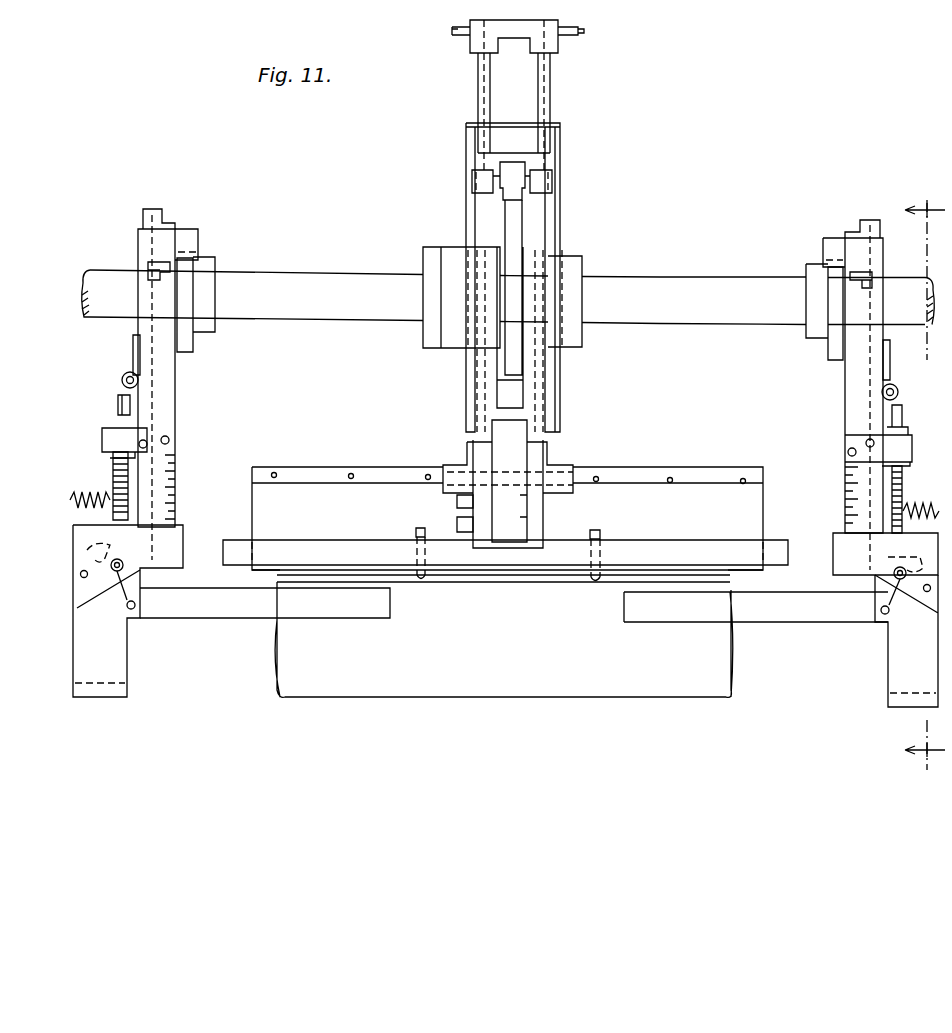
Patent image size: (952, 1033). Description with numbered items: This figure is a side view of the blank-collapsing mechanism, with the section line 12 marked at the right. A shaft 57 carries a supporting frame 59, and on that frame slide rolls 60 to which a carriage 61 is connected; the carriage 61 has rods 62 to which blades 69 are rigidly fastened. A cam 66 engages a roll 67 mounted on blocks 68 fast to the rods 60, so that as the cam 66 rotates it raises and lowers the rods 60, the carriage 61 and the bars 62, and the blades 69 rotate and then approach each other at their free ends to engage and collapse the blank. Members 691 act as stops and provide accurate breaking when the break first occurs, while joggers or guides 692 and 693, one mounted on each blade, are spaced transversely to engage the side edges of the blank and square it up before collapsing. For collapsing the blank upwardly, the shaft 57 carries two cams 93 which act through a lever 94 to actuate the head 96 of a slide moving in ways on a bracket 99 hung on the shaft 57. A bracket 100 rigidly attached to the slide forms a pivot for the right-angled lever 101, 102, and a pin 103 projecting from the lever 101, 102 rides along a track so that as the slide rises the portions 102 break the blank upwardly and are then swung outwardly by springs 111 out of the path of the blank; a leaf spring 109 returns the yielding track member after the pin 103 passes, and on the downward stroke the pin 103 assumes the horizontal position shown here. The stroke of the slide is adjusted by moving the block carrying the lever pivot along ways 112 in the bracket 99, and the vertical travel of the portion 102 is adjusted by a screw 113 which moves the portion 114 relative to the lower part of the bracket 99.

The section line 12 is at (926, 484).
The shaft 57 is at (655, 258).
The supporting frame 59 is at (470, 367).
The rolls 60 is at (541, 98).
The carriage 61 is at (470, 455).
The rods 62 is at (362, 470).
The cam 66 is at (0, 322).
The roll 67 is at (512, 175).
The blocks 68 is at (485, 182).
The blades 69 is at (270, 518).
The members 691 is at (318, 550).
The jogger or guide 692 is at (422, 582).
The jogger or guide 693 is at (594, 585).
The cams 93 is at (185, 352).
The lever 94 is at (188, 244).
The head 96 is at (152, 209).
The bracket 99 is at (150, 372).
The bracket 100 is at (158, 357).
The lever portion 101 is at (120, 403).
The lever portion 102 is at (225, 612).
The pin 103 is at (135, 608).
The leaf spring 109 is at (78, 570).
The springs 111 is at (70, 492).
The ways 112 is at (158, 272).
The screw 113 is at (115, 512).
The portion 114 is at (90, 650).